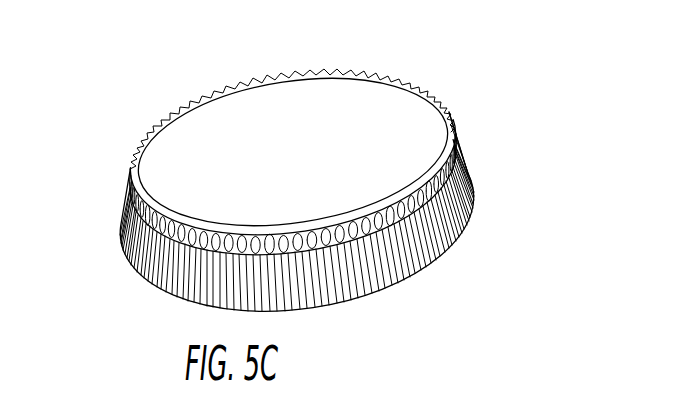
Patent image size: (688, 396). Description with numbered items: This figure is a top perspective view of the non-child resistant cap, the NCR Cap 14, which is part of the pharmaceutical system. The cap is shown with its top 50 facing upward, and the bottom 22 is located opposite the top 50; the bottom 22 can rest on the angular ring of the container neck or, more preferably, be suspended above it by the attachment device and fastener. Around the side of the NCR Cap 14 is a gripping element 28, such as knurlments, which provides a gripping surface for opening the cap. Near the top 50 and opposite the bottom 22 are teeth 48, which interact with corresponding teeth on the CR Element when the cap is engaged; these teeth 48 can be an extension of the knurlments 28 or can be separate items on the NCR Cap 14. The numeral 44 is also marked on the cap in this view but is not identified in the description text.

The NCR Cap 14 is at (72, 175).
The cap 44 is at (516, 143).
The top 50 is at (290, 170).
The teeth 48 is at (457, 122).
The gripping element 28 is at (473, 203).
The bottom 22 is at (342, 301).